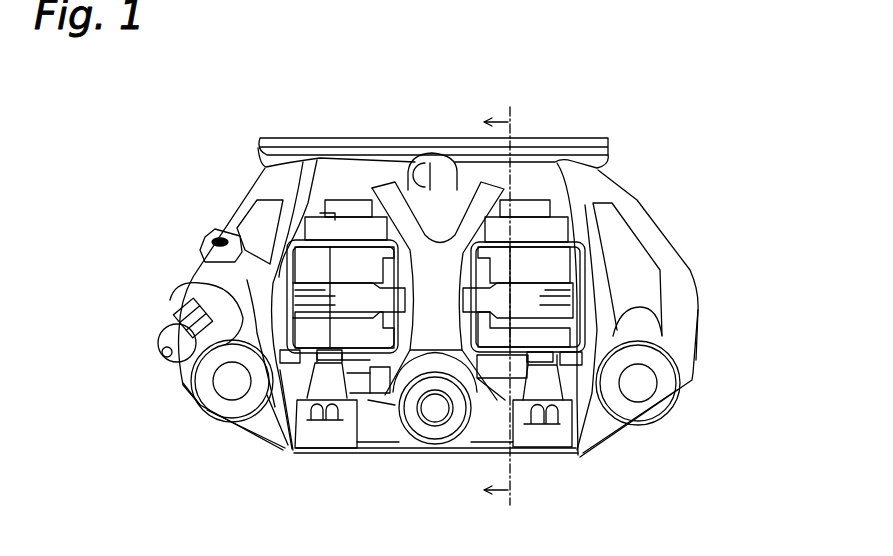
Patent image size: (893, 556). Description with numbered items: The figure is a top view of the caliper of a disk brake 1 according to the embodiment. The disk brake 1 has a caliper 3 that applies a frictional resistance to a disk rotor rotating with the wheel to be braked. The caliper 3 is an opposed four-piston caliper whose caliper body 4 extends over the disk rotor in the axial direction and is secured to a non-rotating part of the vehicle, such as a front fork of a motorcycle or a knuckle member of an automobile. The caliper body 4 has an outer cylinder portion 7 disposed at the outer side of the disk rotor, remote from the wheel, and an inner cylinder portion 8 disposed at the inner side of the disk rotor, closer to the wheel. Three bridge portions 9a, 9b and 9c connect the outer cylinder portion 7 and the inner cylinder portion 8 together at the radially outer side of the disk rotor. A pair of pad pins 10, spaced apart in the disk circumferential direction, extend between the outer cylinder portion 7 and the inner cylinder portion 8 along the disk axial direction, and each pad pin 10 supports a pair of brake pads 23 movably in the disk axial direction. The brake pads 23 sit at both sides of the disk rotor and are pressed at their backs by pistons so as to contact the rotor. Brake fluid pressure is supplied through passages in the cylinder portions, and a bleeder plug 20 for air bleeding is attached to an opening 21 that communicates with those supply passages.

The disk brake 1 is at (431, 303).
The caliper 3 is at (472, 306).
The caliper body 4 is at (693, 240).
The outer cylinder portion 7 is at (380, 453).
The inner cylinder portion 8 is at (368, 138).
The bridge portion 9a is at (683, 325).
The bridge portion 9b is at (432, 272).
The bridge portion 9c is at (250, 203).
The pad pin 10 is at (326, 240).
The bleeder plug 20 is at (163, 343).
The opening 21 is at (177, 298).
The brake pad 23 is at (327, 327).